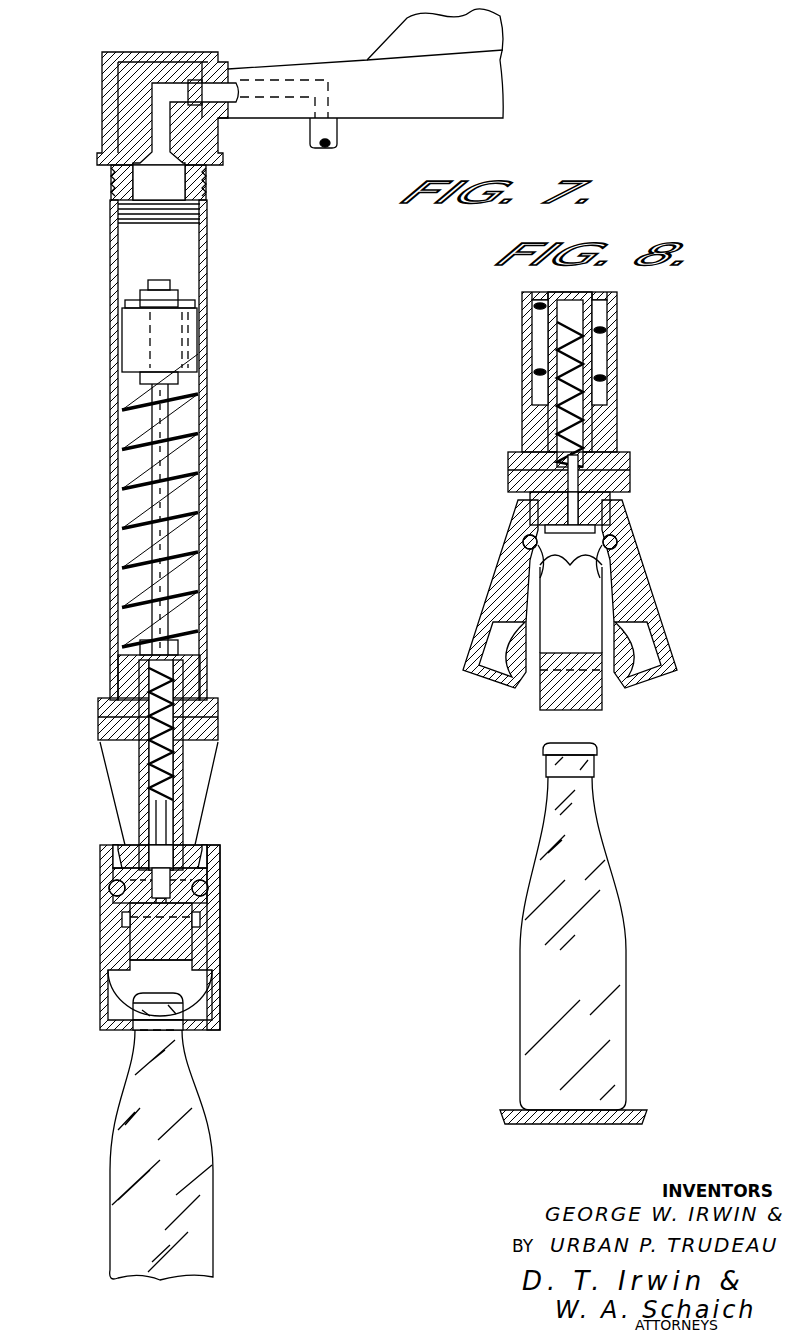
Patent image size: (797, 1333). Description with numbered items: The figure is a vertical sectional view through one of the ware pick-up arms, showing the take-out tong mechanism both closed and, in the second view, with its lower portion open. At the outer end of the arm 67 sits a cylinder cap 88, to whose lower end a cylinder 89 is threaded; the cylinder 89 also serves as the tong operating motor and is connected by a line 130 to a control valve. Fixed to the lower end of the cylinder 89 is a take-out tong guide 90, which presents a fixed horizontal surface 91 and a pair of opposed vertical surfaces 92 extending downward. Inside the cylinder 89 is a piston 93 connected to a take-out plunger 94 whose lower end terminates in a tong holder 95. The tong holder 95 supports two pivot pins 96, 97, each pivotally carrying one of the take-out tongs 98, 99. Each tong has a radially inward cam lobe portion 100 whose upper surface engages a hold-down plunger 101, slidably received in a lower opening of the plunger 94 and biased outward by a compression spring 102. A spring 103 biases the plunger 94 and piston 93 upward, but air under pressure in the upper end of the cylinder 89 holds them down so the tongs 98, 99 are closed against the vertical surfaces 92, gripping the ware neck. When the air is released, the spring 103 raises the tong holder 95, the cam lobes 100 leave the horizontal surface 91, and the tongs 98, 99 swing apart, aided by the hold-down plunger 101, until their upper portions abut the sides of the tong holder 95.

In FIG. 7, the arm 67 is at (363, 104).
In FIG. 7, the cylinder cap 88 is at (160, 77).
In FIG. 7, the cylinder 89 is at (110, 264).
In FIG. 8, the cylinder 89 is at (522, 380).
In FIG. 7, the take-out tong guide 90 is at (115, 760).
In FIG. 8, the take-out tong guide 90 is at (582, 640).
In FIG. 7, the horizontal surface 91 is at (192, 924).
In FIG. 8, the horizontal surface 91 is at (548, 660).
In FIG. 7, the vertical surfaces 92 is at (158, 1006).
In FIG. 8, the vertical surfaces 92 is at (540, 690).
In FIG. 7, the piston 93 is at (135, 338).
In FIG. 7, the take-out plunger 94 is at (110, 660).
In FIG. 8, the take-out plunger 94 is at (600, 312).
In FIG. 7, the tong holder 95 is at (207, 850).
In FIG. 8, the tong holder 95 is at (625, 506).
In FIG. 7, the pivot pin 96 is at (205, 896).
In FIG. 8, the pivot pin 96 is at (620, 541).
In FIG. 7, the pivot pin 97 is at (118, 896).
In FIG. 8, the pivot pin 97 is at (522, 545).
In FIG. 7, the take-out tong 98 is at (212, 968).
In FIG. 8, the take-out tong 98 is at (640, 604).
In FIG. 7, the take-out tong 99 is at (112, 972).
In FIG. 8, the take-out tong 99 is at (497, 600).
In FIG. 7, the cam lobe portion 100 is at (116, 884).
In FIG. 8, the cam lobe portion 100 is at (575, 570).
In FIG. 7, the hold-down plunger 101 is at (135, 824).
In FIG. 8, the hold-down plunger 101 is at (618, 480).
In FIG. 7, the compression spring 102 is at (110, 690).
In FIG. 8, the compression spring 102 is at (600, 366).
In FIG. 7, the spring 103 is at (120, 425).
In FIG. 8, the spring 103 is at (535, 330).
In FIG. 7, the line 130 is at (321, 150).